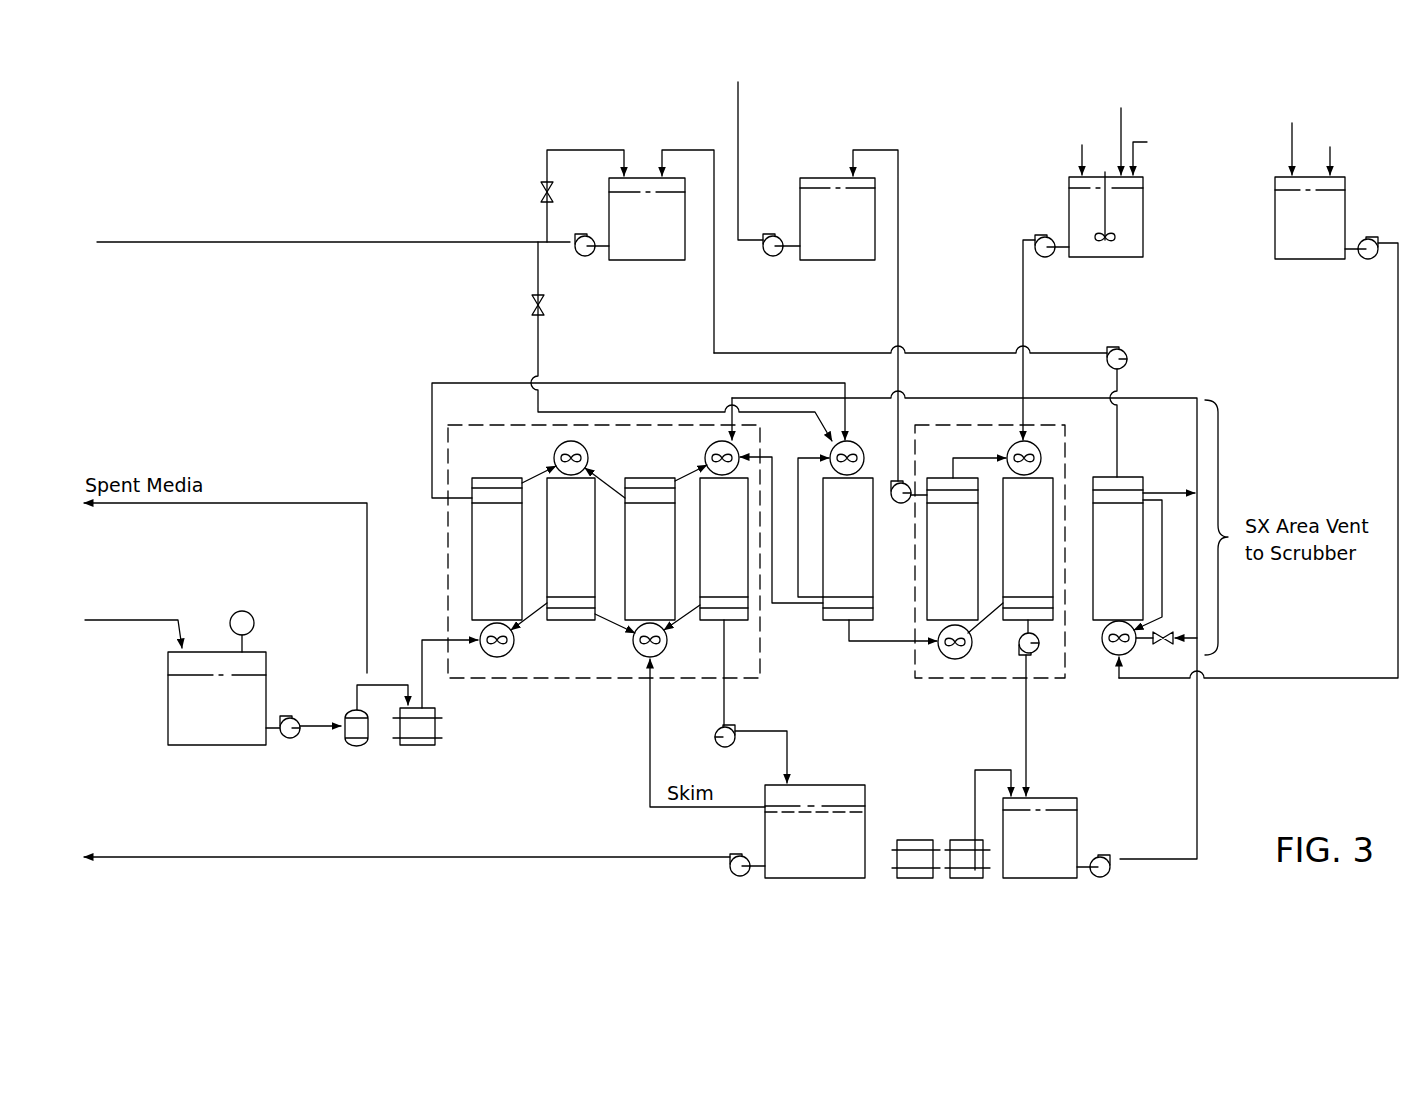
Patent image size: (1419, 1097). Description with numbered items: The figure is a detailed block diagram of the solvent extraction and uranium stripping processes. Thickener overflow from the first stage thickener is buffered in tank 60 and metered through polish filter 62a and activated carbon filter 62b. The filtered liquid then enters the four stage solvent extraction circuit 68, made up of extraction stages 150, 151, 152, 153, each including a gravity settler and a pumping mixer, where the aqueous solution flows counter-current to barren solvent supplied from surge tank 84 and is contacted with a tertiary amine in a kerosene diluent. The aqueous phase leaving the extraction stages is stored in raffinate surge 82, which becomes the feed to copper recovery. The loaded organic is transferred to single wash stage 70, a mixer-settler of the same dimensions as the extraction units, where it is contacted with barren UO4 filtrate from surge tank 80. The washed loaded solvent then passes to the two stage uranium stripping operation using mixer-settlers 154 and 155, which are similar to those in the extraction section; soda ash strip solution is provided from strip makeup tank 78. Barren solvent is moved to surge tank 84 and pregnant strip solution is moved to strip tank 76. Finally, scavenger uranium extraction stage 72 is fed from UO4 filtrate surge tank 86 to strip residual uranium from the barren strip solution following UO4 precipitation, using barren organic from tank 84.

The tank 60 is at (168, 728).
The polish filter 62a is at (349, 749).
The activated carbon filter 62b is at (436, 708).
The solvent extraction circuit 68 is at (447, 546).
The single wash stage 70 is at (836, 561).
The scavenger uranium extraction stage 72 is at (1106, 561).
The strip tank 76 is at (830, 177).
The strip makeup tank 78 is at (1068, 212).
The surge tank 80 is at (643, 177).
The raffinate surge 82 is at (820, 782).
The surge tank 84 is at (1053, 797).
The UO4 filtrate surge tank 86 is at (1347, 207).
The extraction stage 150 is at (480, 561).
The extraction stage 151 is at (556, 561).
The extraction stage 152 is at (633, 561).
The extraction stage 153 is at (707, 561).
The mixer-settler 154 is at (935, 561).
The mixer-settler 155 is at (1011, 561).